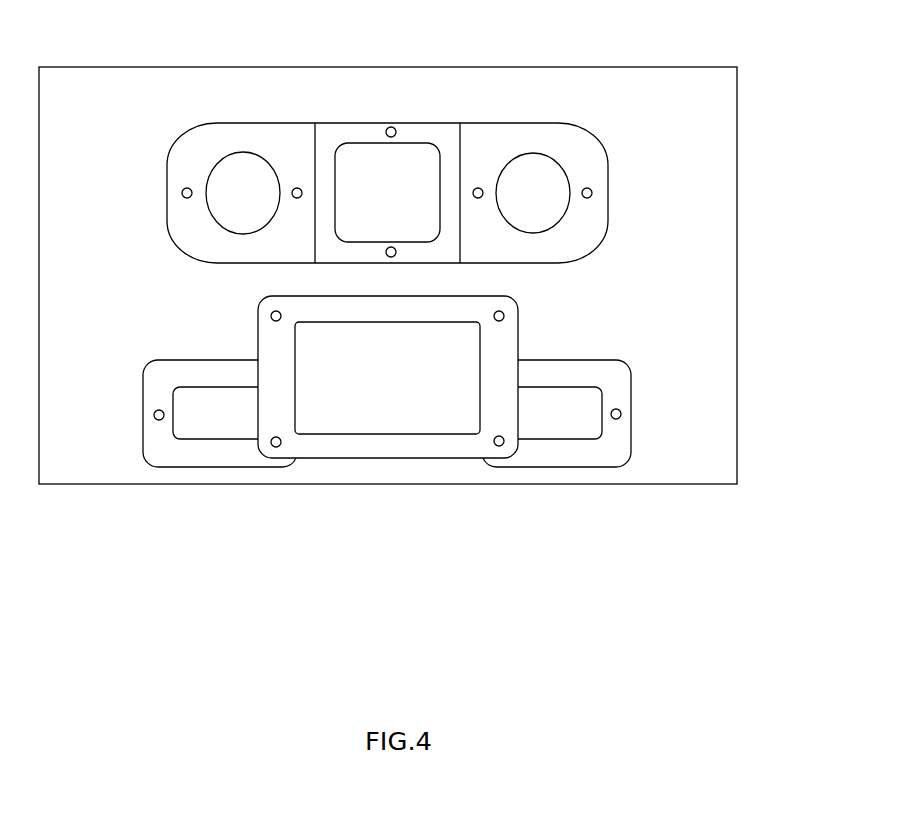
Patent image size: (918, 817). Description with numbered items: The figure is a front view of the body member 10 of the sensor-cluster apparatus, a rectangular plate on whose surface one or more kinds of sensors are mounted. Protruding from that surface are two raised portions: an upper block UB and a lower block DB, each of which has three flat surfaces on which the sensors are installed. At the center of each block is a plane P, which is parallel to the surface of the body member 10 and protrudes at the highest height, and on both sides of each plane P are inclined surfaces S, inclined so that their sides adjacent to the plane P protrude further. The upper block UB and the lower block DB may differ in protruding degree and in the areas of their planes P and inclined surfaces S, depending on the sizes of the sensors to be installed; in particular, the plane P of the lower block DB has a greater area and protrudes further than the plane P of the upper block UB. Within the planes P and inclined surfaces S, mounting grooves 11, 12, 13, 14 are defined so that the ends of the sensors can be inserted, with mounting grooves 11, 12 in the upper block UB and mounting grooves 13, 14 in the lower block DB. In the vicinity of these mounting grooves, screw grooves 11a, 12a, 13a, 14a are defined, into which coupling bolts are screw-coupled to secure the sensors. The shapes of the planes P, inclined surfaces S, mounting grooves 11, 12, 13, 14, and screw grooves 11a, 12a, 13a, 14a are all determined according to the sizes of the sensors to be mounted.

The body member 10 is at (678, 80).
The mounting groove 11 is at (418, 162).
The screw groove 11a is at (389, 127).
The mounting groove 12 is at (535, 170).
The screw groove 12a is at (592, 193).
The mounting groove 13 is at (588, 405).
The screw groove 13a is at (621, 414).
The mounting groove 14 is at (390, 414).
The screw groove 14a is at (499, 447).
The upper block UB is at (607, 152).
The lower block DB is at (530, 313).
The inclined surface S is at (243, 137).
The plane P is at (332, 137).